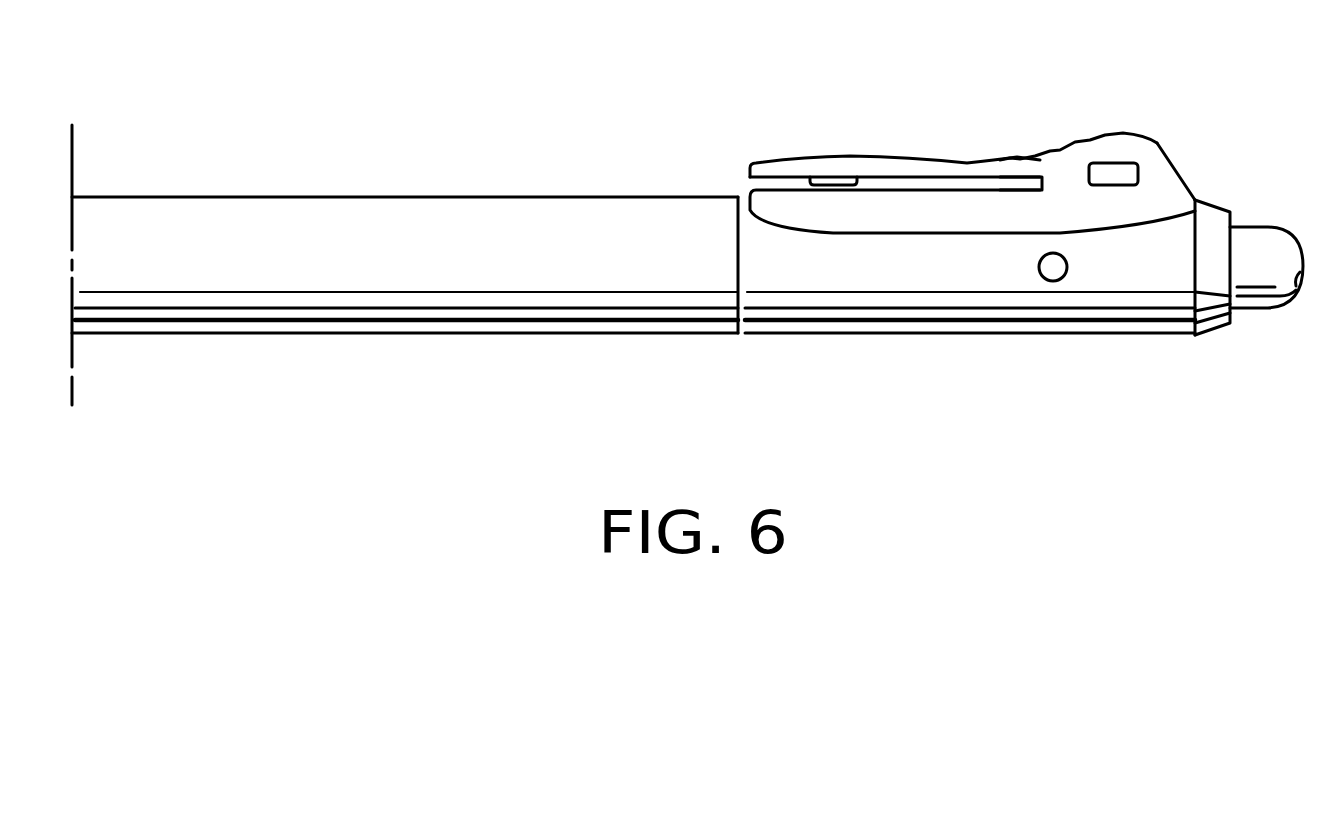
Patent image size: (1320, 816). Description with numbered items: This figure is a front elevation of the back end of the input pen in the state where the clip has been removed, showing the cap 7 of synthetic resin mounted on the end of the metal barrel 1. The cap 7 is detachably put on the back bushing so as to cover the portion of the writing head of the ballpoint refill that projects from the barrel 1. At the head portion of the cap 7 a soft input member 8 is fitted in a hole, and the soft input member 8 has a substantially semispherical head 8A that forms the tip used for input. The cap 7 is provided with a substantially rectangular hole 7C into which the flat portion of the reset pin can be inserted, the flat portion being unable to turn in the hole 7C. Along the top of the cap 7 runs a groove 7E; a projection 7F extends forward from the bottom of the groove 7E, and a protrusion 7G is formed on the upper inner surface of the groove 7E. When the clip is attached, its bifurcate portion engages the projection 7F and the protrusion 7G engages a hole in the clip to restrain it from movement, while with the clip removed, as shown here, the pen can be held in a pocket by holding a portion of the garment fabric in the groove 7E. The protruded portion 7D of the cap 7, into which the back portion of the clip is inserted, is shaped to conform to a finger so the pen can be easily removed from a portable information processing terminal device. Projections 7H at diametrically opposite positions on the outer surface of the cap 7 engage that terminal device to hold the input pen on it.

The barrel 1 is at (246, 232).
The cap 7 is at (948, 267).
The rectangular hole 7C is at (1125, 175).
The protruded portion 7D is at (1105, 150).
The groove 7E is at (758, 163).
The projection 7F is at (1027, 183).
The protrusion 7G is at (828, 182).
The projections 7H is at (1053, 268).
The soft input member 8 is at (1253, 253).
The semispherical head 8A is at (1292, 277).